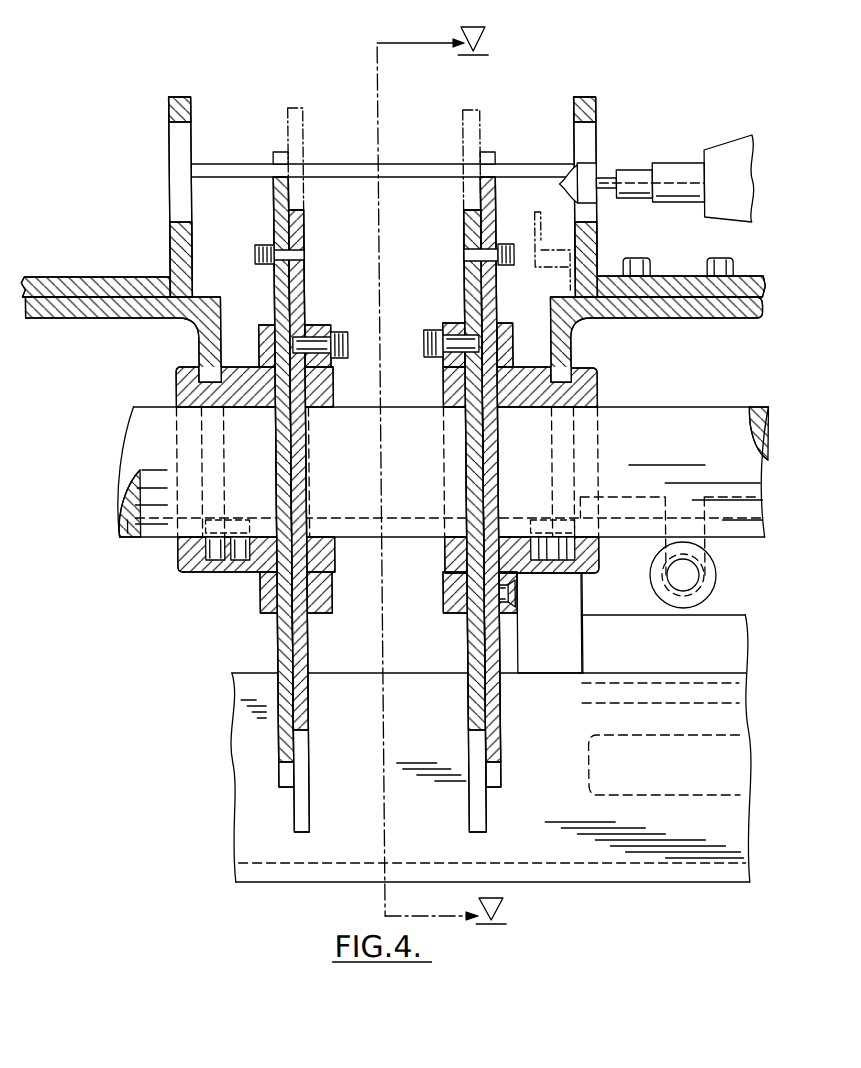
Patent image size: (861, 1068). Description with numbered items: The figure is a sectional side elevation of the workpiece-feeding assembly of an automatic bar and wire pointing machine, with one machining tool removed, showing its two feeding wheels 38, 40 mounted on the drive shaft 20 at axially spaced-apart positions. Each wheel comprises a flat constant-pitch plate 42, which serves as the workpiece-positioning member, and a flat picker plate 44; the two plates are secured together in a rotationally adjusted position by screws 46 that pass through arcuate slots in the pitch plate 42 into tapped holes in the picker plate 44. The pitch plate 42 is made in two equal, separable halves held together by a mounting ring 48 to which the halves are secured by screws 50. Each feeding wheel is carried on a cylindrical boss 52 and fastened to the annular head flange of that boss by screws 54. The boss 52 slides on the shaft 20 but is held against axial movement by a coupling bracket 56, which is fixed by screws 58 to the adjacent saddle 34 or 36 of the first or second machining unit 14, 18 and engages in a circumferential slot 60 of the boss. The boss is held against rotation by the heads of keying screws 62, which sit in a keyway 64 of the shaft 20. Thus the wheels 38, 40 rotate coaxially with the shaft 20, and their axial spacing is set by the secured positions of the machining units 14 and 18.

The first machining unit 14 is at (90, 158).
The second machining unit 18 is at (675, 85).
The drive shaft 20 is at (145, 437).
The saddle 34 is at (88, 276).
The saddle 36 is at (735, 298).
The feeding wheel 38 is at (388, 420).
The feeding wheel 40 is at (527, 100).
The constant-pitch plate 42 is at (278, 204).
The picker plate 44 is at (298, 228).
The screws 46 is at (257, 250).
The mounting ring 48 is at (268, 325).
The screws 50 is at (512, 595).
The cylindrical boss 52 is at (318, 392).
The screws 54 is at (428, 340).
The coupling bracket 56 is at (110, 312).
The screws 58 is at (716, 258).
The circumferential slot 60 is at (214, 379).
The keying screws 62 is at (226, 575).
The keyway 64 is at (368, 556).